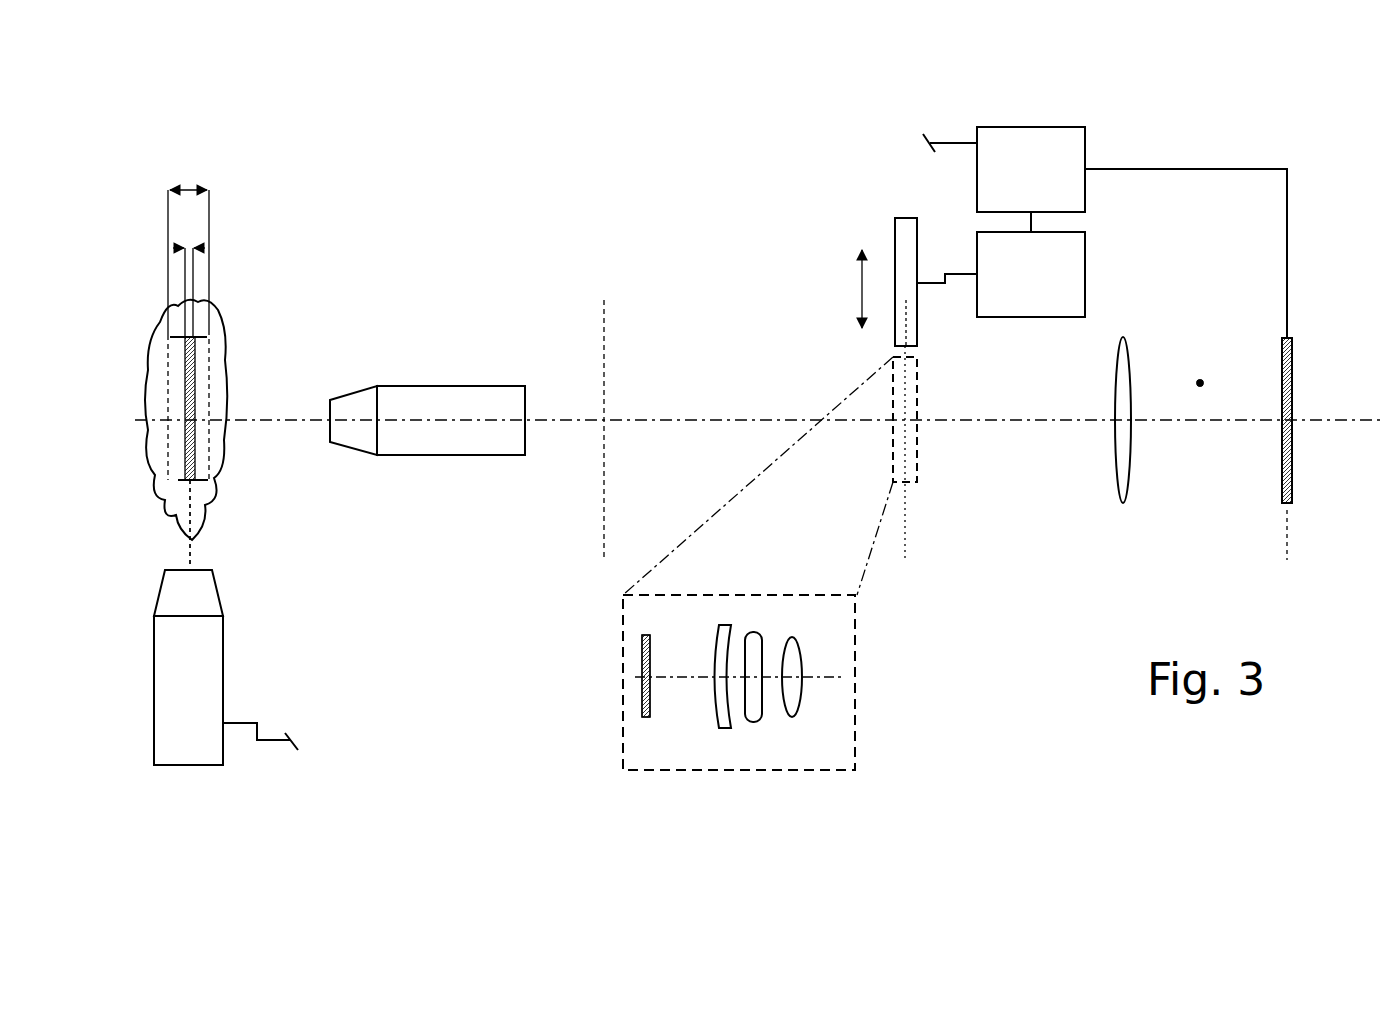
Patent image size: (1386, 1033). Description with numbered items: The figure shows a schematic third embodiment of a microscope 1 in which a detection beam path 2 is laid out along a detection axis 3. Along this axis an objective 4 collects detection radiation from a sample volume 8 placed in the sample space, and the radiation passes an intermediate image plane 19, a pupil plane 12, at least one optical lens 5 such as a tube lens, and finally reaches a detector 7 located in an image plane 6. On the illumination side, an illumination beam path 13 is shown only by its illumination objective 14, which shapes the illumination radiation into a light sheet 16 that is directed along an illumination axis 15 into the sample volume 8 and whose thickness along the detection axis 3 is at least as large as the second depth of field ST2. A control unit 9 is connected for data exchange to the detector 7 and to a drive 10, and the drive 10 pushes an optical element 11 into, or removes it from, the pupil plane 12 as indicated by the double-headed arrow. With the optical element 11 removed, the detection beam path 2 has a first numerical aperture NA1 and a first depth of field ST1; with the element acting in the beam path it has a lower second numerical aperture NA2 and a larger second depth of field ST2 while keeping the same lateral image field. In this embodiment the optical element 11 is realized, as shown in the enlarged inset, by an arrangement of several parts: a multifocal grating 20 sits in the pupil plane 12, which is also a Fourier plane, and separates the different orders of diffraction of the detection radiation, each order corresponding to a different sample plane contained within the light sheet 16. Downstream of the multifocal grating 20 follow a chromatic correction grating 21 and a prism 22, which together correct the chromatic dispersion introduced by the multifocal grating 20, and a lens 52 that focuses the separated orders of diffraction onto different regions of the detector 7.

The microscope 1 is at (475, 208).
The detection beam path 2 is at (547, 285).
The detection axis 3 is at (290, 418).
The objective 4 is at (470, 455).
The optical lens 5 is at (1115, 355).
The image plane 6 is at (1288, 523).
The detector 7 is at (1292, 370).
The sample volume 8 is at (225, 485).
The control unit 9 is at (1020, 197).
The drive 10 is at (1010, 300).
The optical element 11 is at (907, 218).
The pupil plane 12 is at (905, 528).
The illumination beam path 13 is at (263, 619).
The illumination objective 14 is at (223, 660).
The illumination axis 15 is at (190, 558).
The light sheet 16 is at (190, 443).
The intermediate image plane 19 is at (603, 520).
The multifocal grating 20 is at (648, 655).
The chromatic correction grating 21 is at (730, 720).
The prism 22 is at (760, 710).
The lens 52 is at (797, 705).
The first depth of field ST1 is at (190, 247).
The second depth of field ST2 is at (197, 172).
The first numerical aperture NA1 is at (1200, 380).
The second numerical aperture NA2 is at (1200, 383).